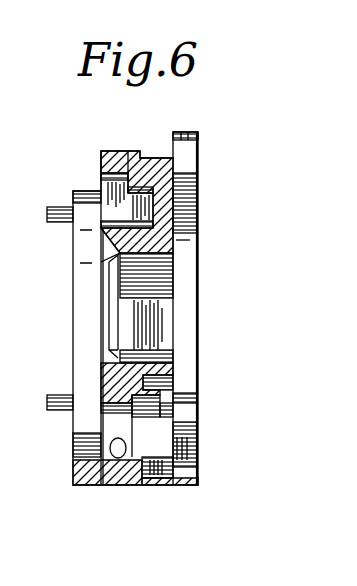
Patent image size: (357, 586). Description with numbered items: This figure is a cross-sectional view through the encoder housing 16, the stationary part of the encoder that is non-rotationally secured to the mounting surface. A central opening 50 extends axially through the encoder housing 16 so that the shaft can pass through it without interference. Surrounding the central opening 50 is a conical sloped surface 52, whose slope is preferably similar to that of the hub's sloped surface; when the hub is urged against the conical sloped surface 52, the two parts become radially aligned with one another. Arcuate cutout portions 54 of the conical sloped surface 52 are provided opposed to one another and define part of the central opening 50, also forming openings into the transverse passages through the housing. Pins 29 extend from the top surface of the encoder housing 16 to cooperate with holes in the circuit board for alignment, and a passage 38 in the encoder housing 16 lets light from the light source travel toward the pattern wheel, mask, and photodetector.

The encoder housing 16 is at (142, 156).
The pins 29 is at (57, 222).
The passage 38 is at (122, 458).
The central opening 50 is at (160, 352).
The conical sloped surface 52 is at (113, 347).
The arcuate cutout portions 54 is at (120, 313).